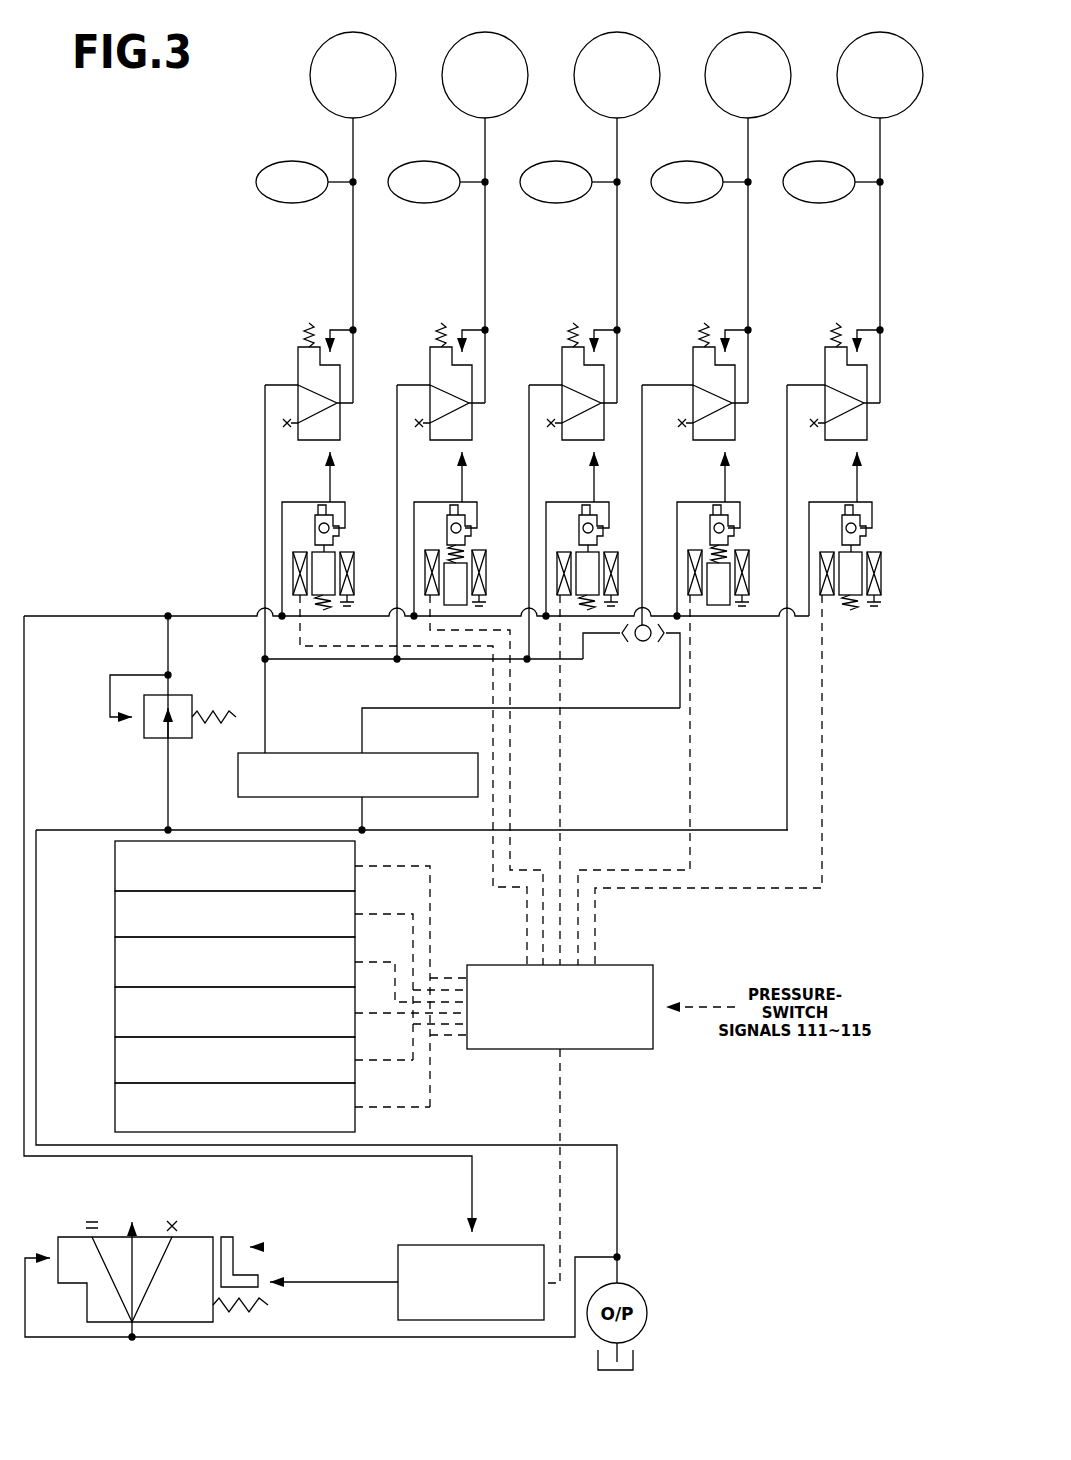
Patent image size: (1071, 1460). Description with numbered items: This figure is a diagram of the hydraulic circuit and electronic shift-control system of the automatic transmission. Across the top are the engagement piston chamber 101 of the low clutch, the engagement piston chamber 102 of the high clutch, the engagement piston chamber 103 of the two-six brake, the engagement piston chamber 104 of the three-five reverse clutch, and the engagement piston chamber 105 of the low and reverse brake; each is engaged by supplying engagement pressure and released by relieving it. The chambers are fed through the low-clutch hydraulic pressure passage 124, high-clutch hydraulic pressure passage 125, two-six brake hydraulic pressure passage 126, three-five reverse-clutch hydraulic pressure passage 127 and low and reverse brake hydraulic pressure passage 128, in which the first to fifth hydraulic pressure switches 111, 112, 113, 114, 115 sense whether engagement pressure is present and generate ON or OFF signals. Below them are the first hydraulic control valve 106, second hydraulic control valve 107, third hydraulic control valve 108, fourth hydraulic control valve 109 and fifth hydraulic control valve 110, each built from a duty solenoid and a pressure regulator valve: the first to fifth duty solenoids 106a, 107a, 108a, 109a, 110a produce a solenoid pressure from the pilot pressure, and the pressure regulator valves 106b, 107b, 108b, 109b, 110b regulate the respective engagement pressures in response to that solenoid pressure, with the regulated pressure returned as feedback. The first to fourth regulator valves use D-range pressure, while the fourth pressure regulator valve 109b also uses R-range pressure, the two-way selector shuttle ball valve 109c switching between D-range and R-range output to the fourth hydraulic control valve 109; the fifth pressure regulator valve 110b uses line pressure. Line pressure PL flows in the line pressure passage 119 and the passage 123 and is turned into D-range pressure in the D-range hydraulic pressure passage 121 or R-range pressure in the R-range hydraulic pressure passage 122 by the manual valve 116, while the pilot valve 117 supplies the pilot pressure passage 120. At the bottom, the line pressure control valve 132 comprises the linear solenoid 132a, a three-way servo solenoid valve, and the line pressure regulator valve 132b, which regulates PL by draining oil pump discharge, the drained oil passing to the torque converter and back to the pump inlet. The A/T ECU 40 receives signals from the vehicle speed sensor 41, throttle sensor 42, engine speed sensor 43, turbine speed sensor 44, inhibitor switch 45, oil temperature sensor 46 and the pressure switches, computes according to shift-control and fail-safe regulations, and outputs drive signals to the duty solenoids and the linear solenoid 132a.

The engagement piston chamber of low clutch 101 is at (321, 47).
The engagement piston chamber of high clutch 102 is at (453, 47).
The engagement piston chamber of 2-6 brake 103 is at (585, 47).
The engagement piston chamber of 3-5 reverse clutch 104 is at (716, 47).
The engagement piston chamber of low and reverse brake 105 is at (848, 47).
The first hydraulic pressure switch 111 is at (286, 160).
The second hydraulic pressure switch 112 is at (418, 160).
The third hydraulic pressure switch 113 is at (550, 160).
The fourth hydraulic pressure switch 114 is at (681, 160).
The fifth hydraulic pressure switch 115 is at (813, 160).
The low-clutch hydraulic pressure passage 124 is at (352, 233).
The high-clutch hydraulic pressure passage 125 is at (484, 233).
The 2-6 brake hydraulic pressure passage 126 is at (616, 233).
The 3-5 reverse-clutch hydraulic pressure passage 127 is at (747, 233).
The low and reverse brake hydraulic pressure passage 128 is at (879, 233).
The first hydraulic control valve 106 is at (306, 316).
The second hydraulic control valve 107 is at (438, 316).
The third hydraulic control valve 108 is at (570, 316).
The fourth hydraulic control valve 109 is at (701, 316).
The fifth hydraulic control valve 110 is at (833, 316).
The first duty solenoid 106a is at (313, 498).
The second duty solenoid 107a is at (445, 498).
The third duty solenoid 108a is at (577, 498).
The fourth duty solenoid 109a is at (708, 498).
The fifth duty solenoid 110a is at (840, 498).
The first pressure regulator valve 106b is at (293, 358).
The second pressure regulator valve 107b is at (425, 358).
The third pressure regulator valve 108b is at (557, 358).
The fourth pressure regulator valve 109b is at (688, 358).
The fifth pressure regulator valve 110b is at (820, 358).
The two-way selector shuttle ball valve 109c is at (638, 650).
The manual valve 116 is at (395, 797).
The pilot valve 117 is at (144, 733).
The line pressure passage 119 is at (272, 829).
The pilot pressure passage 120 is at (231, 619).
The D-range hydraulic pressure passage 121 is at (405, 660).
The R-range hydraulic pressure passage 122 is at (600, 712).
The line pressure passage 123 is at (786, 698).
The automatic transmission electronic control unit 40 is at (620, 965).
The vehicle speed sensor 41 is at (115, 866).
The throttle sensor 42 is at (115, 914).
The engine speed sensor 43 is at (115, 962).
The turbine speed sensor 44 is at (115, 1012).
The inhibitor switch 45 is at (115, 1060).
The oil temperature sensor 46 is at (115, 1107).
The line pressure control valve 132 is at (214, 1350).
The linear solenoid 132a is at (428, 1238).
The line pressure regulator valve 132b is at (214, 1226).